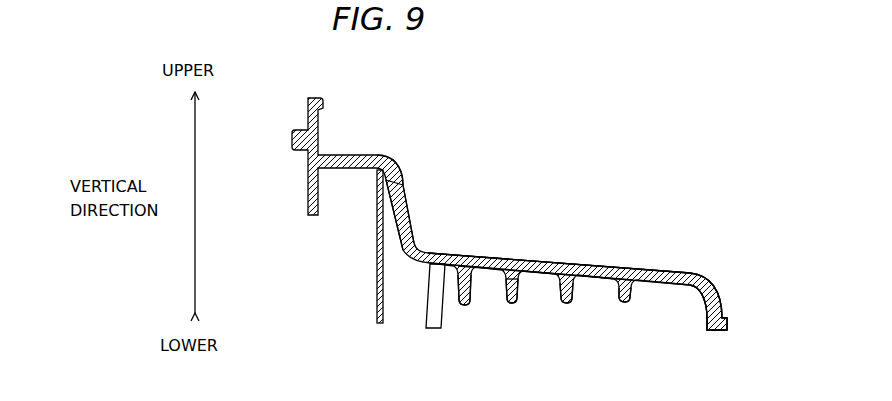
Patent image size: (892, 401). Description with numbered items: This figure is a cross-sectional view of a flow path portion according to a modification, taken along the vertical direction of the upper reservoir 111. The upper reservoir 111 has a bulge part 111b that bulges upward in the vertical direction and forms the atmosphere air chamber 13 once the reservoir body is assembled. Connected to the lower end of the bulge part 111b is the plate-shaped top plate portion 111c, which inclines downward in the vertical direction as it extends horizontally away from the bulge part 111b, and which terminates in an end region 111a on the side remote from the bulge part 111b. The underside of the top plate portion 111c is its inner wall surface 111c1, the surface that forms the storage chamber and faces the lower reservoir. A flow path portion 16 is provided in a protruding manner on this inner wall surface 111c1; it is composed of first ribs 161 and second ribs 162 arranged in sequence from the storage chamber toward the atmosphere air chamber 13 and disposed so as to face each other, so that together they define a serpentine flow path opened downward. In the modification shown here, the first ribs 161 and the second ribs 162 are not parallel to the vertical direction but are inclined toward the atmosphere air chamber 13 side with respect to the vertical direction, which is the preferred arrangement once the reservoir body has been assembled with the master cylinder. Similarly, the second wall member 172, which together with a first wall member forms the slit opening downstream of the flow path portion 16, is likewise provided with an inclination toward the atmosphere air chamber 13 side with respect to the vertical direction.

The atmosphere air chamber 13 is at (362, 235).
The upper reservoir 111 is at (602, 211).
The end portion of holder plate 111a is at (722, 302).
The bulge part 111b is at (402, 192).
The top plate portion 111c is at (553, 268).
The inner wall surface 111c1 is at (498, 276).
The flow path portion 16 is at (612, 352).
The first ribs 161 is at (466, 306).
The second ribs 162 is at (519, 303).
The second wall member 172 is at (432, 329).